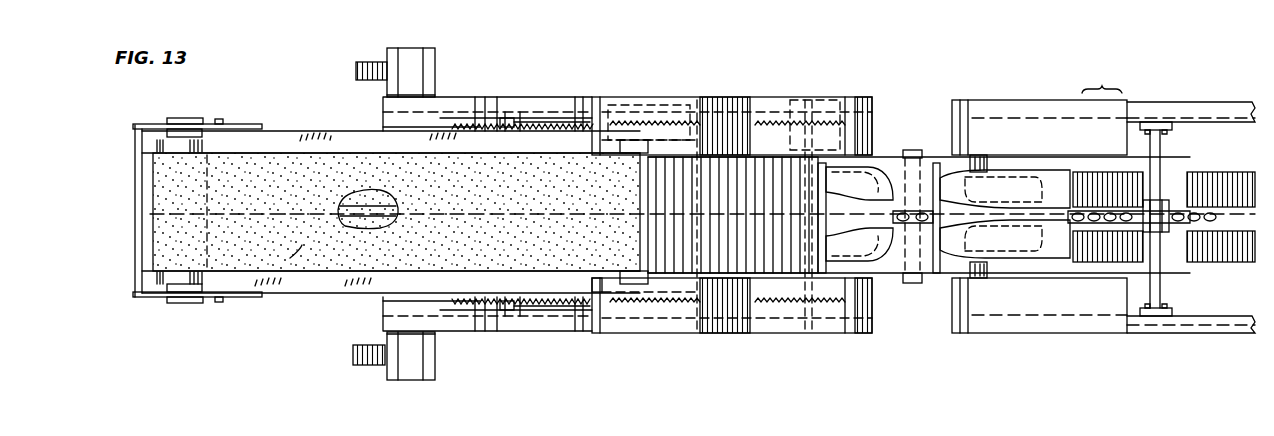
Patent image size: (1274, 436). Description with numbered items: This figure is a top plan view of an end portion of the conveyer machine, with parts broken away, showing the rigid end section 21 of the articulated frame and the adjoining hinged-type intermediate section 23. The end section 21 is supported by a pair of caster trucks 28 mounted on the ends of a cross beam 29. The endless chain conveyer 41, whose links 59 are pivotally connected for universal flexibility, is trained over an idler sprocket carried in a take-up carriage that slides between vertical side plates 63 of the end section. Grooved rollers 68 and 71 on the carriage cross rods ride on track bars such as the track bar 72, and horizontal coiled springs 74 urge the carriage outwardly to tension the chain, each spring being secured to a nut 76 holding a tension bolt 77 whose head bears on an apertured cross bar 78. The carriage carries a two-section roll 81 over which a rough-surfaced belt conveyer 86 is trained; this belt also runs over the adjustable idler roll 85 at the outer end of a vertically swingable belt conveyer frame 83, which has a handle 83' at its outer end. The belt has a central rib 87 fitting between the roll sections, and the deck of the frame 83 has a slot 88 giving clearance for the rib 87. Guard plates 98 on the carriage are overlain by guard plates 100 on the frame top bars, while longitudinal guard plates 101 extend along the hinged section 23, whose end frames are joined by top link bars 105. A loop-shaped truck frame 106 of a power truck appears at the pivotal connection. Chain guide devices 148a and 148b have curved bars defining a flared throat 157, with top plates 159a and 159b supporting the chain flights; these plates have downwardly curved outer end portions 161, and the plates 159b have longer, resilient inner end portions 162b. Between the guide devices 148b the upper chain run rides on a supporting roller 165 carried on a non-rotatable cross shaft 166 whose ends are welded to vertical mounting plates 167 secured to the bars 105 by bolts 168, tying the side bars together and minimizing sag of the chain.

The end section 21 is at (587, 84).
The intermediate section 23 is at (1102, 77).
The caster truck 28 is at (374, 62).
The cross beam 29 is at (432, 55).
The chain conveyer 41 is at (750, 172).
The chain conveyer link 59 is at (1212, 210).
The side plate 63 is at (586, 310).
The grooved roller 68 is at (818, 110).
The grooved roller 71 is at (645, 130).
The track bar 72 is at (568, 310).
The coiled spring 74 is at (552, 305).
The nut 76 is at (520, 305).
The tension bolt 77 is at (476, 300).
The apertured cross bar 78 is at (490, 305).
The roll 81 is at (590, 285).
The belt conveyer frame 83 is at (395, 237).
The handle 83' is at (175, 210).
The idler roll 85 is at (160, 278).
The belt conveyer 86 is at (302, 252).
The rib 87 is at (276, 180).
The slot 88 is at (345, 228).
The guard plate 98 is at (680, 110).
The guard plate 100 is at (835, 105).
The guard plate 101 is at (1025, 105).
The top link bar 105 is at (1168, 105).
The truck frame 106 is at (914, 150).
The guide device 148a is at (876, 258).
The guide device 148b is at (964, 260).
The throat 157 is at (900, 192).
The top plate 159a is at (832, 176).
The top plate 159b is at (1005, 246).
The outer end portion 161 is at (913, 283).
The inner end portion 162b is at (1120, 250).
The supporting roller 165 is at (1165, 232).
The cross shaft 166 is at (1158, 290).
The mounting plate 167 is at (1214, 122).
The bolt 168 is at (1175, 133).